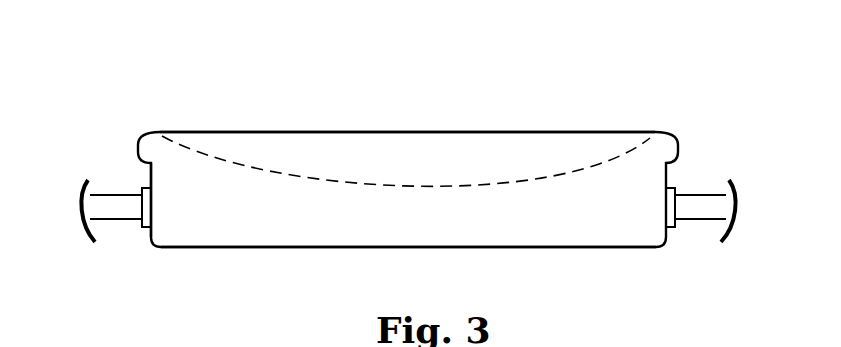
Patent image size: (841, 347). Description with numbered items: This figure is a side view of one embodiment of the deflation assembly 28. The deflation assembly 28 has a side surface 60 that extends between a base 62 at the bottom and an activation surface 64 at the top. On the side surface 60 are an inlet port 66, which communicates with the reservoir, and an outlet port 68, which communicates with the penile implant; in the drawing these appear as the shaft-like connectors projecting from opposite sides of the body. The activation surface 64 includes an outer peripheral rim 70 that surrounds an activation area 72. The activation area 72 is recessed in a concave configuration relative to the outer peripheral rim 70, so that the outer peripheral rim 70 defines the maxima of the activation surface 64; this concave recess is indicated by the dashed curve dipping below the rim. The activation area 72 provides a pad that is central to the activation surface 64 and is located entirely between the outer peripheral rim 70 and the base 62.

The deflation assembly 28 is at (169, 82).
The side surface 60 is at (150, 172).
The base 62 is at (293, 248).
The activation surface 64 is at (545, 124).
The inlet port 66 is at (703, 214).
The outlet port 68 is at (113, 214).
The outer peripheral rim 70 is at (445, 131).
The activation area 72 is at (343, 184).